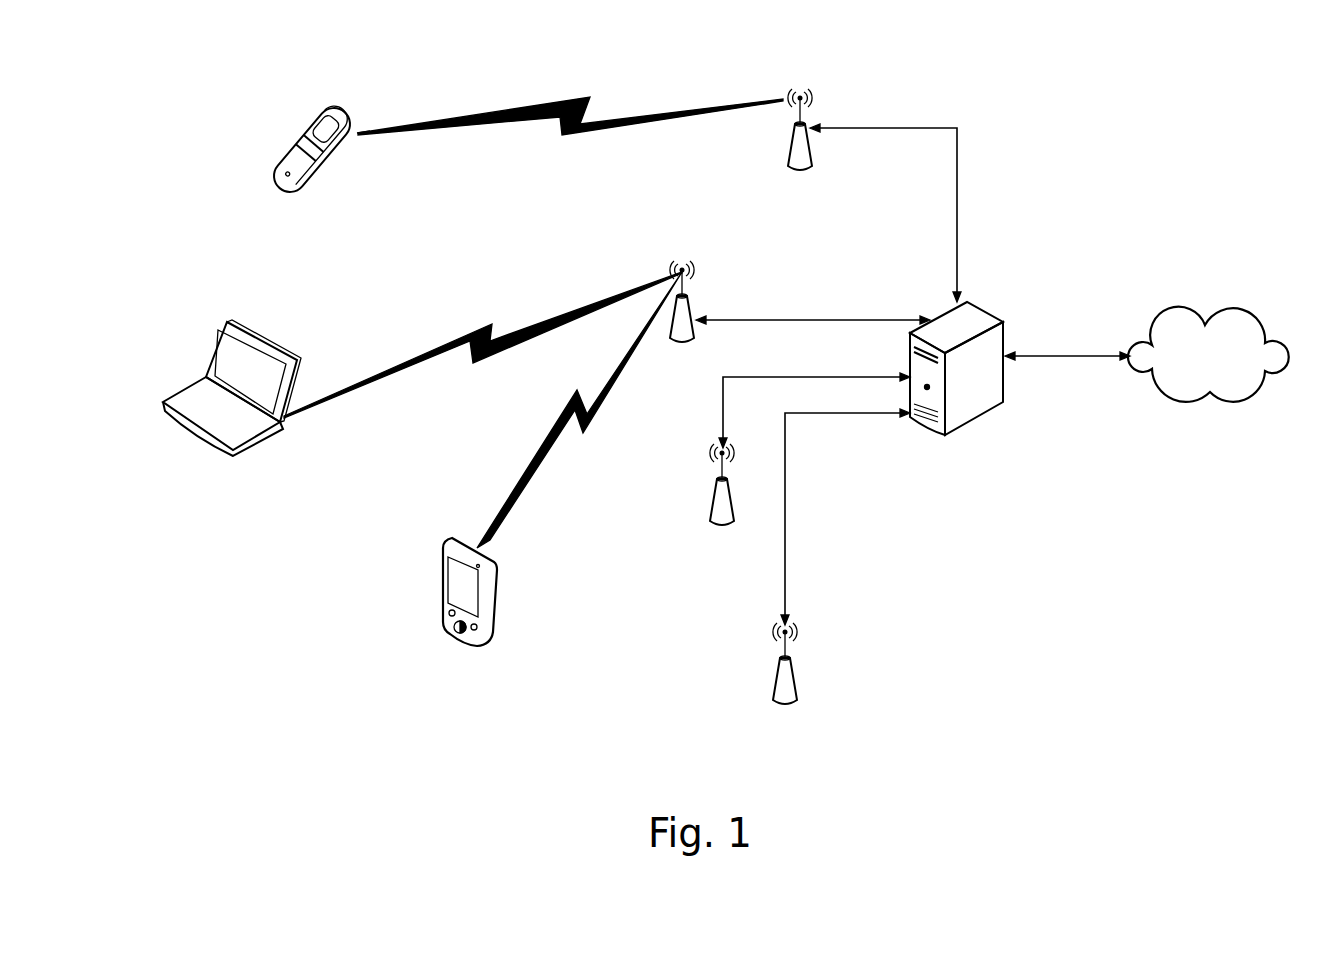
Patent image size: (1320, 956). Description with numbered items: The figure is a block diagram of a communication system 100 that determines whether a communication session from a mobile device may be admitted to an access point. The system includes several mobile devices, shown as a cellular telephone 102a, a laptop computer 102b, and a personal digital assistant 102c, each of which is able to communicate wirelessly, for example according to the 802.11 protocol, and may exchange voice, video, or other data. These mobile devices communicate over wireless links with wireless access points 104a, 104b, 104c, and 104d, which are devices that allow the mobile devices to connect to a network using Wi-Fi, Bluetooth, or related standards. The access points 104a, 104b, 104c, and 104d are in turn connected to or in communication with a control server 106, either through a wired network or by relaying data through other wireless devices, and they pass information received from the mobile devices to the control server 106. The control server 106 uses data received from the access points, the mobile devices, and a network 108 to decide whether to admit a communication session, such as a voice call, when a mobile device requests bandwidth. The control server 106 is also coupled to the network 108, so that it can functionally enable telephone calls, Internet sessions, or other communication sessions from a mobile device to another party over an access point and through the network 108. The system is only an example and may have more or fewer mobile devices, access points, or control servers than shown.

The communication system 100 is at (1163, 99).
The mobile device 102a is at (313, 117).
The mobile device 102b is at (227, 322).
The mobile device 102c is at (443, 568).
The wireless access point 104a is at (788, 160).
The wireless access point 104b is at (687, 298).
The wireless access point 104c is at (710, 515).
The wireless access point 104d is at (773, 695).
The control server 106 is at (1003, 322).
The network 108 is at (1183, 398).